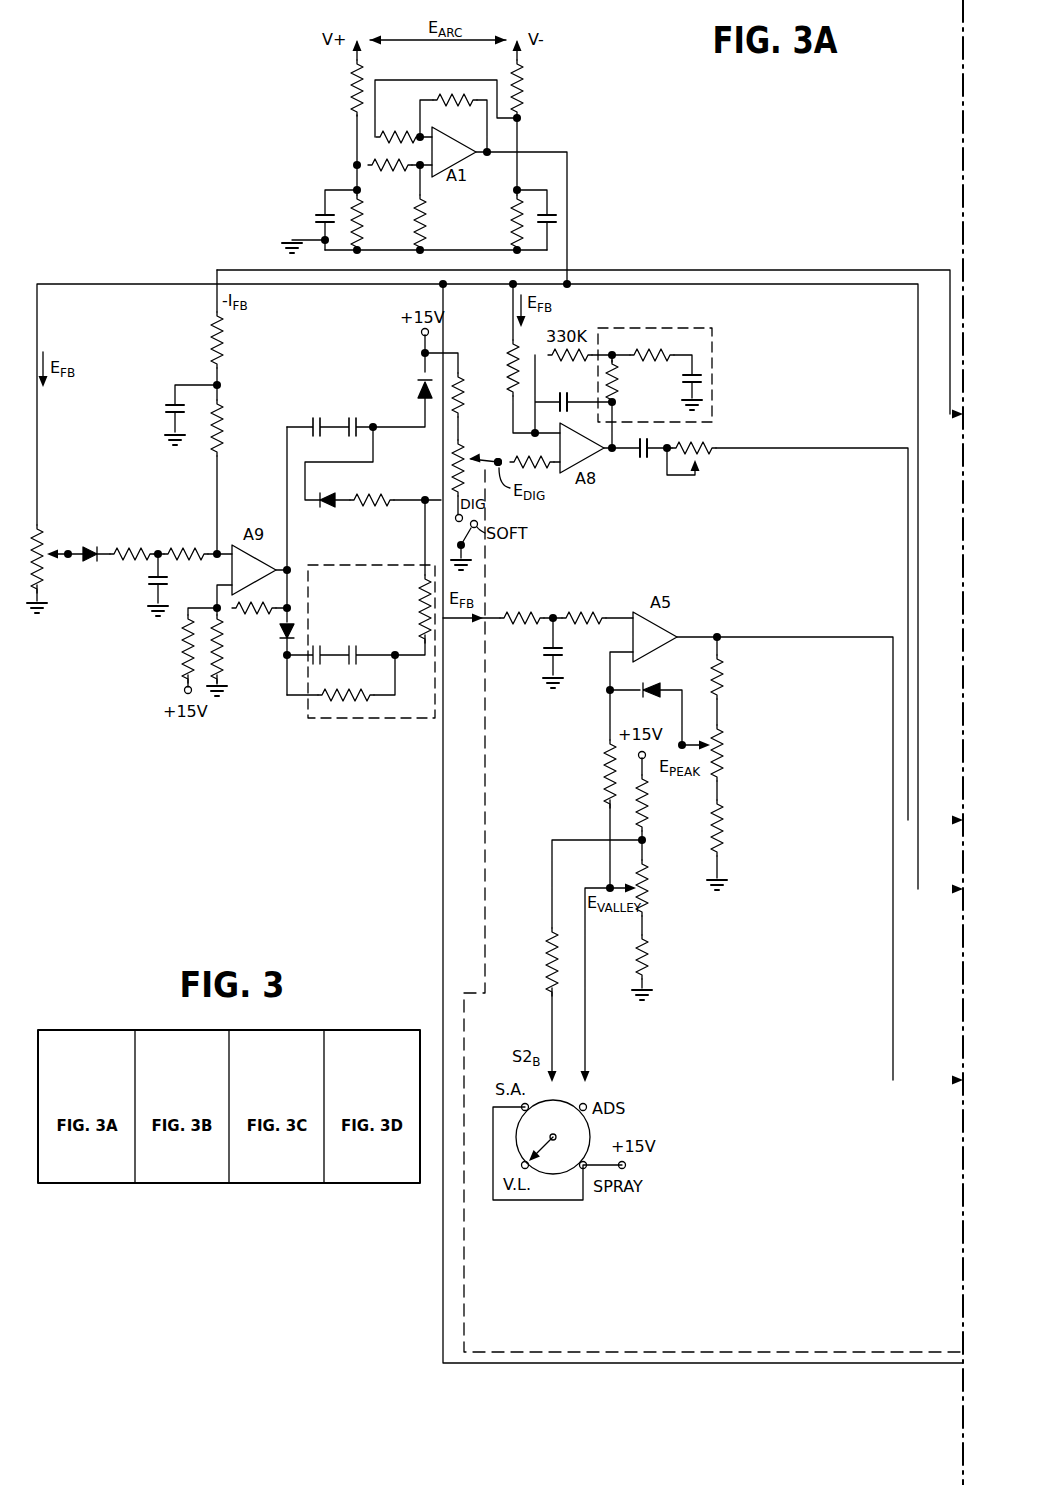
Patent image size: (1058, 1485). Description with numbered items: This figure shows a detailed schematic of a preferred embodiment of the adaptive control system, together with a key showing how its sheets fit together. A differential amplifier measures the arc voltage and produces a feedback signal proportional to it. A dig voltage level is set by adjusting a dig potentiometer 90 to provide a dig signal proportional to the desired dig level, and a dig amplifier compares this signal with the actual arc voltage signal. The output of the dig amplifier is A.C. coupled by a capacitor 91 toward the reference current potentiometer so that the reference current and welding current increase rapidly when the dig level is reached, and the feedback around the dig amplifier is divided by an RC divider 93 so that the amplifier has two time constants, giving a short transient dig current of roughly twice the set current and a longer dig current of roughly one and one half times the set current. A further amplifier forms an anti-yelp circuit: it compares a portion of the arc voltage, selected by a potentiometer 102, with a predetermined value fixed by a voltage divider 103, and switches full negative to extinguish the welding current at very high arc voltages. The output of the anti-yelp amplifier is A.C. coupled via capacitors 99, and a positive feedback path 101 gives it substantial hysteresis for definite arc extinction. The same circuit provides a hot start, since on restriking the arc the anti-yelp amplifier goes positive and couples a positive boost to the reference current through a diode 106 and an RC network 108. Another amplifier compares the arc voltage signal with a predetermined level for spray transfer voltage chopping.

The dig potentiometer 90 is at (463, 460).
The capacitor 91 is at (646, 461).
The RC divider 93 is at (687, 330).
The capacitors 99 is at (342, 420).
The positive feedback path 101 is at (262, 613).
The potentiometer 102 is at (50, 566).
The voltage divider 103 is at (175, 649).
The diode 106 is at (281, 640).
The RC network 108 is at (338, 721).